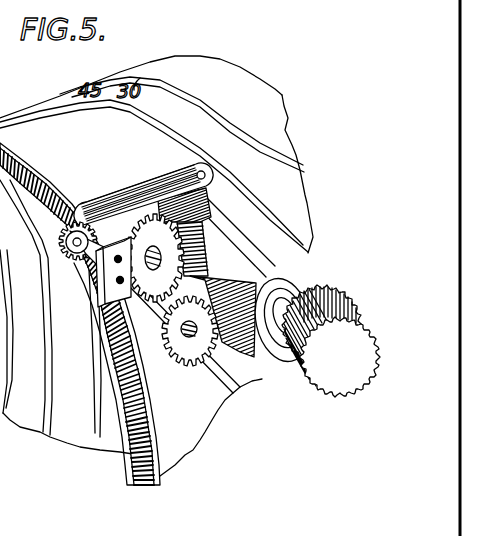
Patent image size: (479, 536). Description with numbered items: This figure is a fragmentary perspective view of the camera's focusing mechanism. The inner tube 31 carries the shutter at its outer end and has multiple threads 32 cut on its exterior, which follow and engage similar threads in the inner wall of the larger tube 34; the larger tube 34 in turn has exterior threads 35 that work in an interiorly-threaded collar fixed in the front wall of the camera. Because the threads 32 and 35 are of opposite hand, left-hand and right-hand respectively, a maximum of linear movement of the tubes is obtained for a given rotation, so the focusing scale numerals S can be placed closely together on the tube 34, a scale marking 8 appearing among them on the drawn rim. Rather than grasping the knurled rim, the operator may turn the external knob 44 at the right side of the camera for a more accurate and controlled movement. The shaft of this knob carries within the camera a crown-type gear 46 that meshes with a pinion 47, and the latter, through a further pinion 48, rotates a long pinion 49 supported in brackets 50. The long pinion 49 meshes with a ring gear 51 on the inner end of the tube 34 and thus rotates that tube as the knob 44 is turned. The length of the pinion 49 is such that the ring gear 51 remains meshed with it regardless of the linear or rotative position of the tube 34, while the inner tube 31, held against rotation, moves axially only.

The larger tube 34 is at (245, 75).
The exterior threads 35 is at (303, 160).
The multiple threads 32 is at (45, 433).
The tube 31 is at (77, 433).
The graduated ring 8 is at (142, 113).
The focusing scale numerals S is at (134, 90).
The long pinion 49 is at (170, 171).
The pinion 48 is at (196, 240).
The pinion 47 is at (237, 375).
The crown-type gear 46 is at (297, 277).
The external knob 44 is at (340, 285).
The brackets 50 is at (73, 254).
The ring gear 51 is at (143, 487).